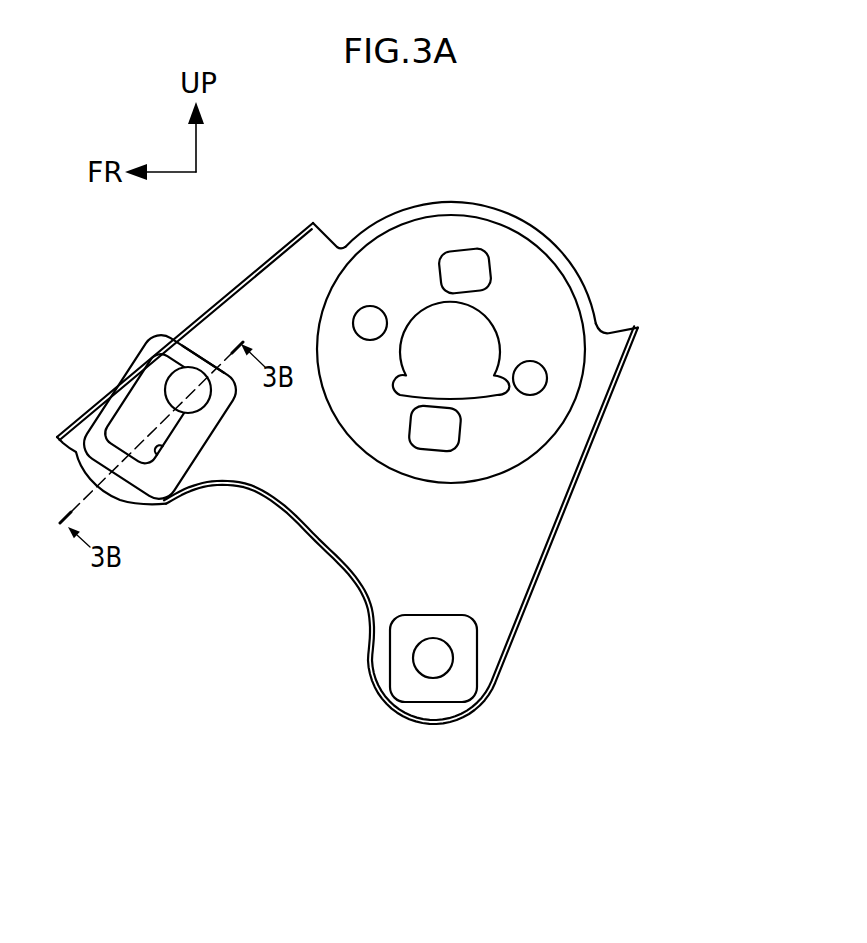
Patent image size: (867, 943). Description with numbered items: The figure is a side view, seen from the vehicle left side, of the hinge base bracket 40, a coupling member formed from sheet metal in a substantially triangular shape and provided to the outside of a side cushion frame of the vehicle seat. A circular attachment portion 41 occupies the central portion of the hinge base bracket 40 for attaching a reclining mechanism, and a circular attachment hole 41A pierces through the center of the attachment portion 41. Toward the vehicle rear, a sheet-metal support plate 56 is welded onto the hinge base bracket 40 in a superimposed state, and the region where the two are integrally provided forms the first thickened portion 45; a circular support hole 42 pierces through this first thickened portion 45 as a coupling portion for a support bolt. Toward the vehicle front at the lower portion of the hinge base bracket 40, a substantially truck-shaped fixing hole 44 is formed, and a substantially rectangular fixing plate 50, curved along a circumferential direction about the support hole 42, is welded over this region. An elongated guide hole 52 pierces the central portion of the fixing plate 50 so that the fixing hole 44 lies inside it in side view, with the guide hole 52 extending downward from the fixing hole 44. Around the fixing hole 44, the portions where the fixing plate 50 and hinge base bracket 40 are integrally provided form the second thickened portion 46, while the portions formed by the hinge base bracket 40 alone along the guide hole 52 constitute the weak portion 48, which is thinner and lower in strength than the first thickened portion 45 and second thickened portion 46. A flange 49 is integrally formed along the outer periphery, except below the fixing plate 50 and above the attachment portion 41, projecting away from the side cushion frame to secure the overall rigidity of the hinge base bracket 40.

The hinge base bracket 40 is at (571, 243).
The attachment portion 41 is at (575, 290).
The attachment hole 41A is at (416, 318).
The support hole 42 is at (438, 651).
The fixing hole 44 is at (186, 370).
The first thickened portion 45 is at (442, 692).
The second thickened portion 46 is at (203, 363).
The weak portion 48 is at (140, 422).
The flange 49 is at (278, 253).
The fixing plate 50 is at (130, 373).
The guide hole 52 is at (158, 455).
The support plate 56 is at (478, 618).